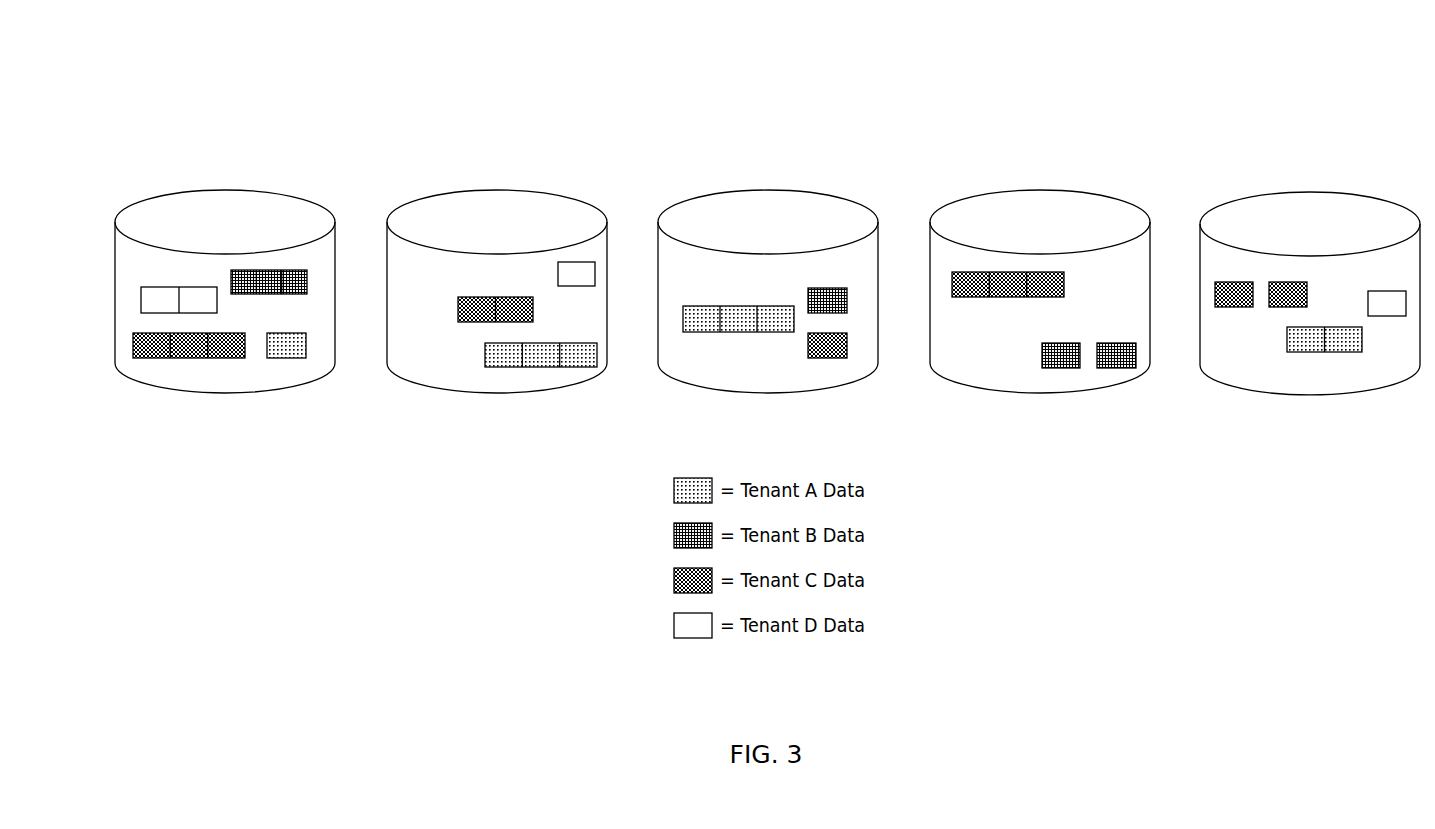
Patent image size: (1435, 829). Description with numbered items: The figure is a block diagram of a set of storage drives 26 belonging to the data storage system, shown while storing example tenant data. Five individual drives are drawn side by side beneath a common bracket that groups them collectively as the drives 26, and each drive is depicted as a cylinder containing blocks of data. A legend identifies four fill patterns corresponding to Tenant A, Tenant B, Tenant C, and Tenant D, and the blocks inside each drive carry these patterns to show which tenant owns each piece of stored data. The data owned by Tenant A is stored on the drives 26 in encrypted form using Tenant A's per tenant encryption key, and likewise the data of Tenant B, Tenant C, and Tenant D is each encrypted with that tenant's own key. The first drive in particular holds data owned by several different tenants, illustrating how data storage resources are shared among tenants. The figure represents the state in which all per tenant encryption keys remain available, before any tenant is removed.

The storage drives 26 is at (107, 54).